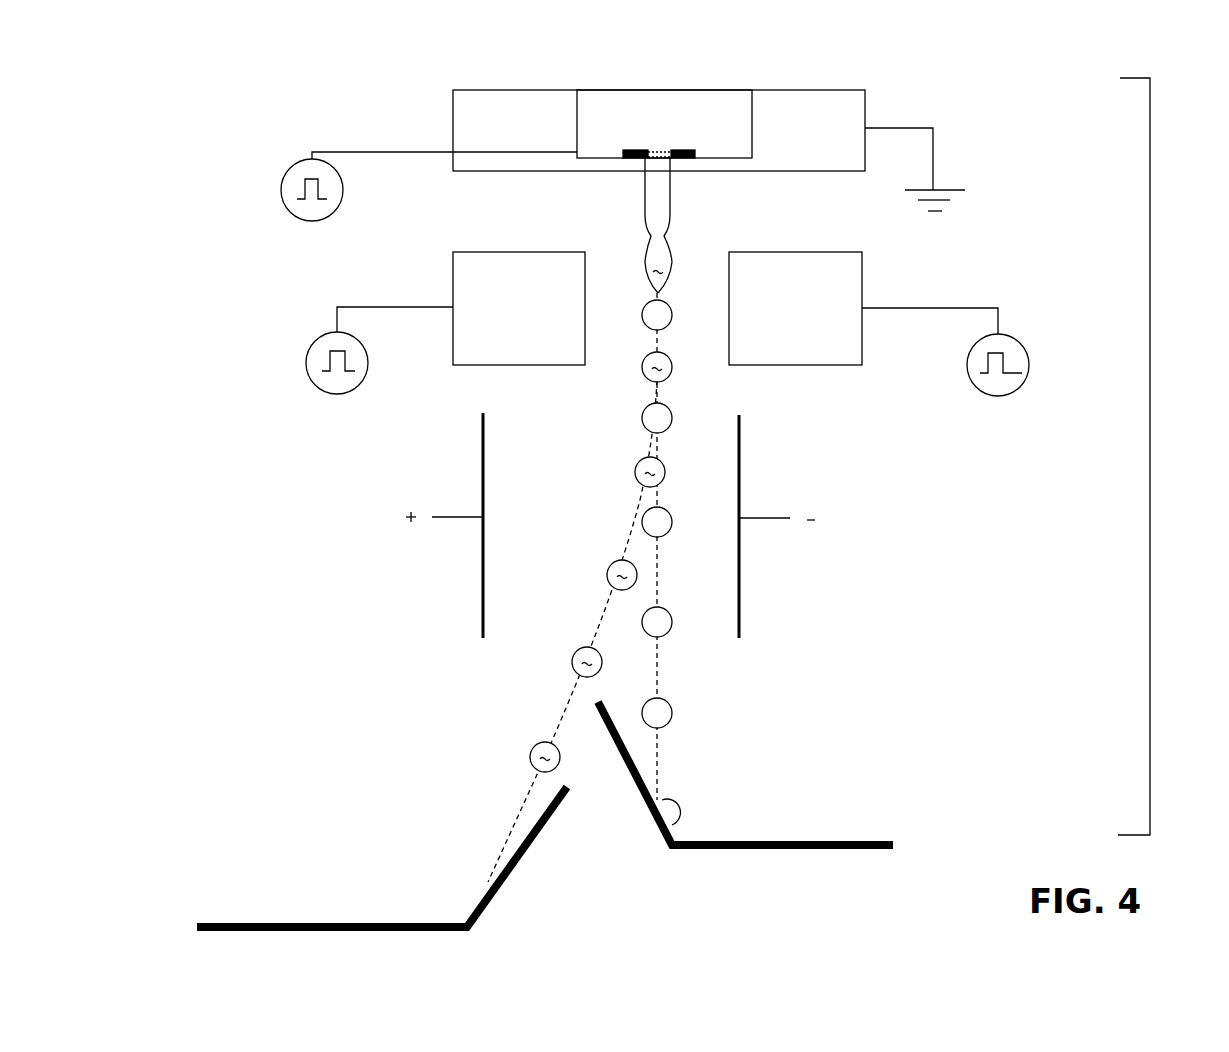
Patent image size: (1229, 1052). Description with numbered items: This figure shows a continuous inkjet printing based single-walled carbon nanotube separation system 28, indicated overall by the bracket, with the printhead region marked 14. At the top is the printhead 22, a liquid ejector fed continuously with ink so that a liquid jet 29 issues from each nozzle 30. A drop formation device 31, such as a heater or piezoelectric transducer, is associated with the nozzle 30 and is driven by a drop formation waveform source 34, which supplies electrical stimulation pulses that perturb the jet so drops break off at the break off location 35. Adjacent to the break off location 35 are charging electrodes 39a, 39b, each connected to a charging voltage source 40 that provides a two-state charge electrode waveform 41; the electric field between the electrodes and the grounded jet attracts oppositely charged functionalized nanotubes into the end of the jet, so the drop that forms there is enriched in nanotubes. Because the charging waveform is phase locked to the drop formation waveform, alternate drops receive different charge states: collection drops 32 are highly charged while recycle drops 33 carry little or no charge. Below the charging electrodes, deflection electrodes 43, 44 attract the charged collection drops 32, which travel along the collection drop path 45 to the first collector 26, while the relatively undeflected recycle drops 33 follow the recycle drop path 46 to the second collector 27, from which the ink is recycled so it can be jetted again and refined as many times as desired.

The printhead 14 is at (865, 476).
The printhead 22 is at (855, 98).
The first collector 26 is at (312, 920).
The second collector 27 is at (825, 840).
The SWNT separation system 28 is at (1150, 458).
The liquid jet 29 is at (660, 200).
The nozzle 30 is at (652, 168).
The drop formation device 31 is at (643, 150).
The collection drops 32 is at (667, 327).
The recycle drops 33 is at (641, 370).
The drop formation waveform source 34 is at (310, 220).
The break off location 35 is at (667, 293).
The charging electrode 39a is at (452, 282).
The charging electrode 39b is at (862, 270).
The charging voltage source 40 is at (337, 393).
The charge electrode waveform 41 is at (307, 358).
The deflection electrode 43 is at (480, 456).
The deflection electrode 44 is at (740, 463).
The collection drop path 45 is at (521, 815).
The recycle drop path 46 is at (658, 767).